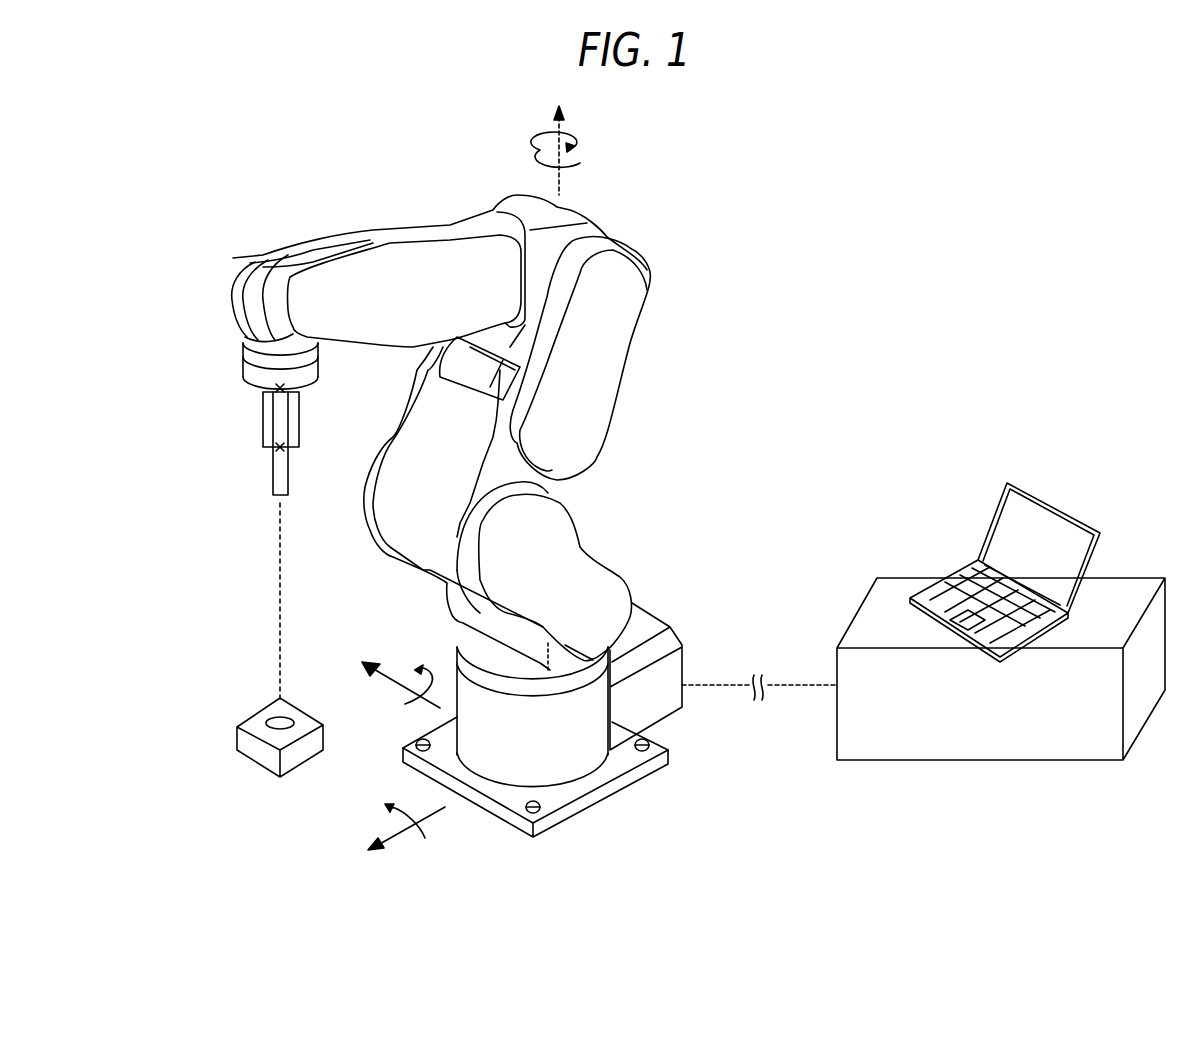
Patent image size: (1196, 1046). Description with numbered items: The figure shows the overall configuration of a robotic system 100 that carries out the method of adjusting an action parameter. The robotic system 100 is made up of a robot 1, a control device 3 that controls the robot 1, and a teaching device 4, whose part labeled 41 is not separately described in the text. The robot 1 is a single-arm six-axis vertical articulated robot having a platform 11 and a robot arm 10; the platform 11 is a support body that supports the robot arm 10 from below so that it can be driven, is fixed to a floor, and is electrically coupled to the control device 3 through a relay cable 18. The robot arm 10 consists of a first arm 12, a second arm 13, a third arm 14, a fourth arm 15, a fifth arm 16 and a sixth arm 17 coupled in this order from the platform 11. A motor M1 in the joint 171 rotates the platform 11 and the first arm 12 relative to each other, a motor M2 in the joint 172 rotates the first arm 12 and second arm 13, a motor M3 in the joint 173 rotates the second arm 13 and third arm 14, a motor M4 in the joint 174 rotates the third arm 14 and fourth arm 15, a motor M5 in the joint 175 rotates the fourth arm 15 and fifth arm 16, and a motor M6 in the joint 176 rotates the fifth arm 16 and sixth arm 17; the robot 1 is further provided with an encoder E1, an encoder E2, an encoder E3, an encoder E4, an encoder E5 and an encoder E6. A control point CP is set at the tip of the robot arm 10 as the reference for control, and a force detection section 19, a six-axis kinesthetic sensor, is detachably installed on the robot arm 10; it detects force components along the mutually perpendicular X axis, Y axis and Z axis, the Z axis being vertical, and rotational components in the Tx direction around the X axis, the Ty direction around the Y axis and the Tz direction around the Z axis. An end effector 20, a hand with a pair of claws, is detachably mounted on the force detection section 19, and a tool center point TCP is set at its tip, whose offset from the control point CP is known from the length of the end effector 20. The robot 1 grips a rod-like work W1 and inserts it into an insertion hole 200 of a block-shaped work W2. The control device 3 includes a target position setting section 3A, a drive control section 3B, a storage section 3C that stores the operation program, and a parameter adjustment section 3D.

The robotic system 100 is at (1062, 183).
The robot 1 is at (722, 185).
The robot arm 10 is at (652, 257).
The platform 11 is at (533, 767).
The first arm 12 is at (612, 598).
The second arm 13 is at (590, 422).
The third arm 14 is at (570, 208).
The fourth arm 15 is at (433, 283).
The fifth arm 16 is at (258, 277).
The sixth arm 17 is at (245, 347).
The relay cable 18 is at (798, 690).
The force detection section 19 is at (318, 372).
The end effector 20 is at (262, 415).
The joint 171 is at (488, 640).
The joint 172 is at (375, 500).
The joint 173 is at (605, 220).
The joint 174 is at (495, 215).
The joint 175 is at (280, 255).
The joint 176 is at (320, 347).
The motor M1 is at (577, 728).
The encoder E1 is at (570, 710).
The motor M2 is at (562, 576).
The encoder E2 is at (540, 550).
The motor M3 is at (556, 456).
The encoder E3 is at (547, 450).
The motor M4 is at (566, 311).
The encoder E4 is at (600, 280).
The motor M5 is at (397, 230).
The encoder E5 is at (390, 280).
The motor M6 is at (232, 283).
The encoder E6 is at (248, 295).
The control point CP is at (278, 388).
The tool center point TCP is at (278, 449).
The work W1 is at (282, 478).
The work W2 is at (262, 753).
The insertion hole 200 is at (268, 722).
The control device 3 is at (1128, 575).
The target position setting section 3A is at (893, 722).
The drive control section 3B is at (961, 722).
The storage section 3C is at (1029, 722).
The parameter adjustment section 3D is at (1095, 722).
The teaching device 4 is at (1055, 503).
The display unit 41 is at (1020, 537).
The X axis X is at (391, 674).
The Y axis Y is at (393, 837).
The Z axis Z is at (559, 135).
The Tx direction Tx is at (405, 704).
The Ty direction Ty is at (425, 838).
The Tz direction Tz is at (594, 150).